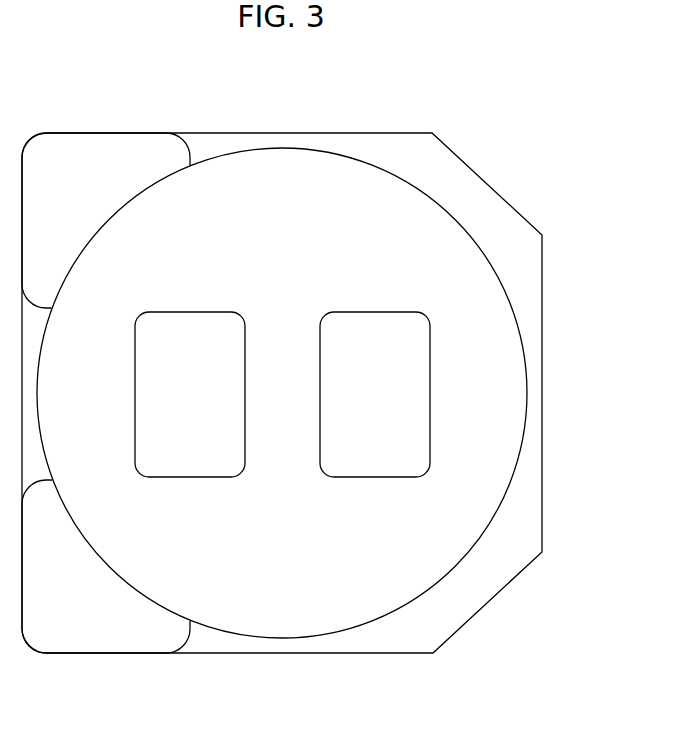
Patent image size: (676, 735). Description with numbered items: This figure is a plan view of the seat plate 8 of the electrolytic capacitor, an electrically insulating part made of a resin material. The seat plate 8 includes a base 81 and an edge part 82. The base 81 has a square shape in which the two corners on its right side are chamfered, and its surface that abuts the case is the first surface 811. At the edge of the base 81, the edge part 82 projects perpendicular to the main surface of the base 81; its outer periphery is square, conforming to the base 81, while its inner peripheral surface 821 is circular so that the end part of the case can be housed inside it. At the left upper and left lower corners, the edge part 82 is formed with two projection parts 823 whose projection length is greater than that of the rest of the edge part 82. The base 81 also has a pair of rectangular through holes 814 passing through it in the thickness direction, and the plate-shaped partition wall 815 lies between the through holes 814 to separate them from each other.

The seat plate 8 is at (261, 93).
The base 81 is at (268, 133).
The edge part 82 is at (320, 145).
The first surface 811 is at (490, 383).
The through holes 814 is at (188, 335).
The partition wall 815 is at (300, 388).
The inner peripheral surface 821 is at (458, 246).
The projection parts 823 is at (103, 150).